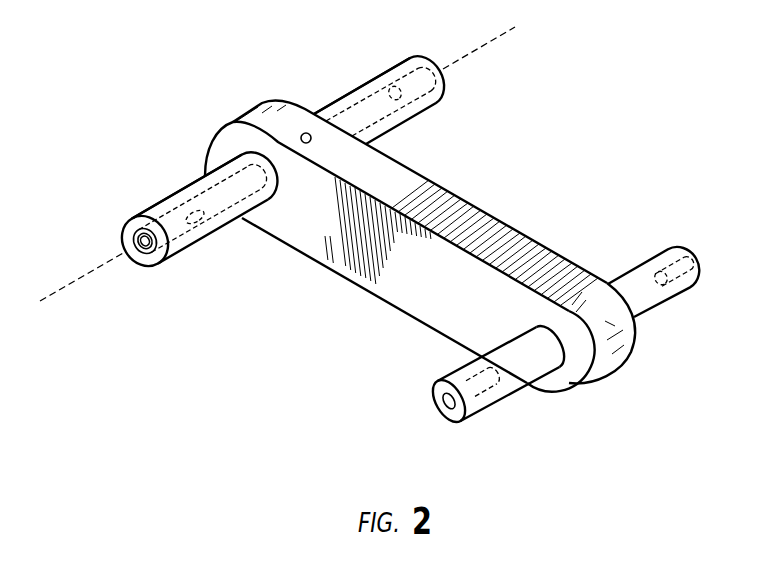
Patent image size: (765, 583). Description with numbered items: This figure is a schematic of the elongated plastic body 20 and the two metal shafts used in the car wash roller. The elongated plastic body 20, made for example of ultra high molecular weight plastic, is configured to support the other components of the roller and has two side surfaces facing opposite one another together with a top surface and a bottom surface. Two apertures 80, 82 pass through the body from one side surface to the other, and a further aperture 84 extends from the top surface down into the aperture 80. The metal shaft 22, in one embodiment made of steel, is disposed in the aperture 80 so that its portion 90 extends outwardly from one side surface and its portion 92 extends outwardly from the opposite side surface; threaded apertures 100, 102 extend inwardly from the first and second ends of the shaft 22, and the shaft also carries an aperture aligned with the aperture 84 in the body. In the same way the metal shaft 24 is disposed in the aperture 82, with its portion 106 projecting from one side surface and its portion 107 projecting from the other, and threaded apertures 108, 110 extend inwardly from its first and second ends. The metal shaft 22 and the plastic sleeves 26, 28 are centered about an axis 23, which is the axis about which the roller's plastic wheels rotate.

The elongated plastic body 20 is at (470, 203).
The metal shaft 22 is at (139, 253).
The axis 23 is at (80, 268).
The metal shaft 24 is at (456, 425).
The plastic sleeve 26 is at (159, 200).
The plastic sleeve 28 is at (376, 60).
The aperture 80 is at (281, 169).
The aperture 82 is at (548, 325).
The aperture 84 is at (311, 140).
The portion 90 is at (200, 187).
The portion 92 is at (360, 97).
The threaded aperture 100 is at (190, 224).
The threaded aperture 102 is at (420, 89).
The portion 106 is at (513, 395).
The portion 107 is at (661, 305).
The threaded aperture 108 is at (470, 380).
The threaded aperture 110 is at (668, 262).